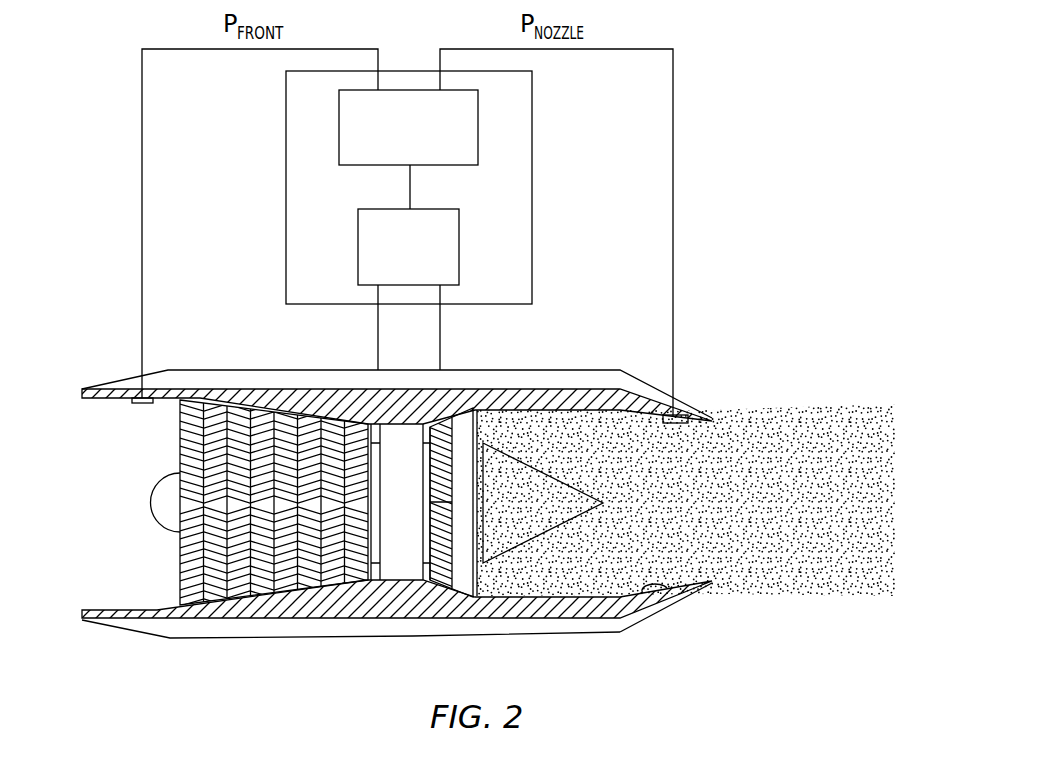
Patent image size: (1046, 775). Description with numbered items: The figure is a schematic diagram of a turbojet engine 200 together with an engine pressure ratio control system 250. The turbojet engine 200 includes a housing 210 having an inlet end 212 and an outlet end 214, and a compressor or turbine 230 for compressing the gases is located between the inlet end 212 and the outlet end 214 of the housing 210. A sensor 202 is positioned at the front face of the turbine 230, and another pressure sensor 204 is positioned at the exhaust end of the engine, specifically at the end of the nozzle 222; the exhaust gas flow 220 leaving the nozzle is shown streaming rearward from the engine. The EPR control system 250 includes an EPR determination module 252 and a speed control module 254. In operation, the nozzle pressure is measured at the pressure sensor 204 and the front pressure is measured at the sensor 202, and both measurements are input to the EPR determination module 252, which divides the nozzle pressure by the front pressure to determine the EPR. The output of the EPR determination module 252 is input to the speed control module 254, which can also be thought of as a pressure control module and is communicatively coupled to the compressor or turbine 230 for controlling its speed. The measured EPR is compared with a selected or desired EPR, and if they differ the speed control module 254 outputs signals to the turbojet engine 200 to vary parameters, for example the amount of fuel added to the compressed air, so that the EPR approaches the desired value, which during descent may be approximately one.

The turbojet engine 200 is at (527, 375).
The sensor 202 is at (142, 403).
The pressure sensor 204 is at (688, 408).
The housing 210 is at (108, 610).
The inlet end 212 is at (88, 404).
The outlet end 214 is at (705, 572).
The exhaust gas flow 220 is at (797, 577).
The nozzle 222 is at (670, 593).
The compressor or turbine 230 is at (179, 553).
The engine pressure ratio control system 250 is at (533, 188).
The EPR determination module 252 is at (481, 128).
The speed control module 254 is at (462, 247).